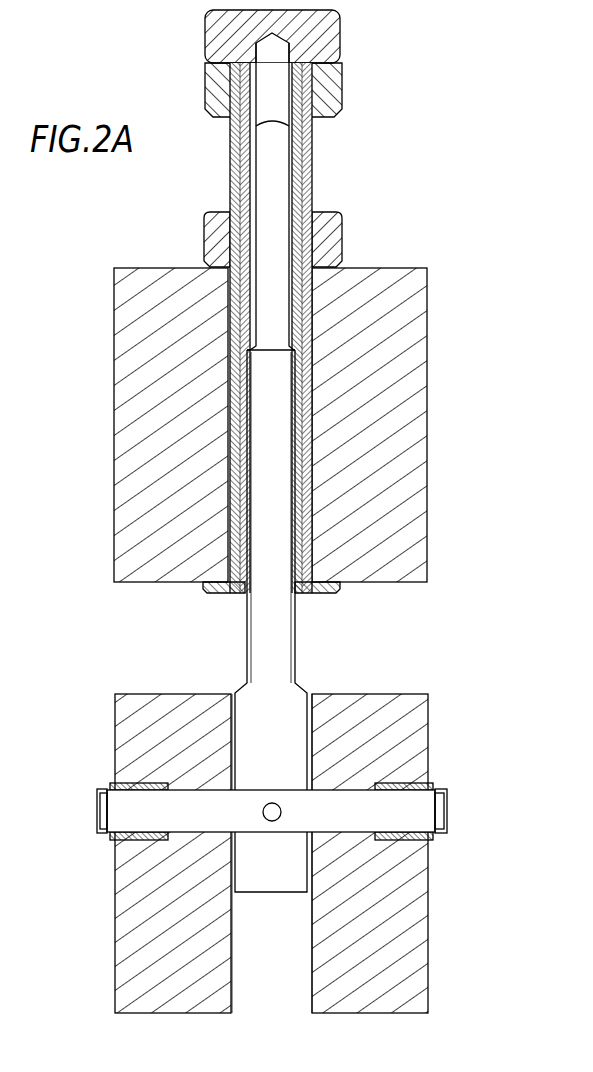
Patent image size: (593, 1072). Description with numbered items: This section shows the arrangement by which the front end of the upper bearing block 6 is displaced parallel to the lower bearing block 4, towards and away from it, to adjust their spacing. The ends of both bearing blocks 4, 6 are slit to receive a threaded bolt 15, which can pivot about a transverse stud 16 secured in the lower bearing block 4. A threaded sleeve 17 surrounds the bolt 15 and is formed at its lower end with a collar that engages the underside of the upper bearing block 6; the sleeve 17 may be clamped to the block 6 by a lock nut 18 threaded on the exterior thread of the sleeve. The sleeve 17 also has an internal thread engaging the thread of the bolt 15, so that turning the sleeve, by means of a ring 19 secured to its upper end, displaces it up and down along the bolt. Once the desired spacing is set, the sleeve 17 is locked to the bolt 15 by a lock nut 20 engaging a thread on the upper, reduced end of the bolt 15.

The lower bearing block 4 is at (412, 718).
The upper bearing block 6 is at (415, 307).
The threaded bolt 15 is at (285, 636).
The transverse stud 16 is at (415, 803).
The threaded sleeve 17 is at (240, 535).
The lock nut 18 is at (335, 234).
The ring 19 is at (333, 79).
The lock nut 20 is at (332, 32).